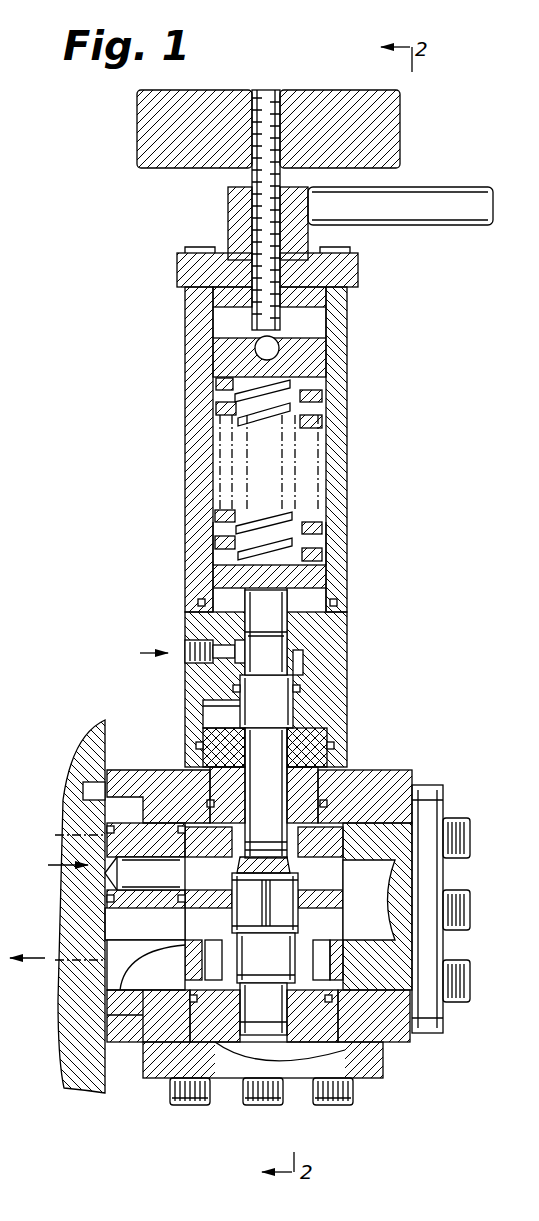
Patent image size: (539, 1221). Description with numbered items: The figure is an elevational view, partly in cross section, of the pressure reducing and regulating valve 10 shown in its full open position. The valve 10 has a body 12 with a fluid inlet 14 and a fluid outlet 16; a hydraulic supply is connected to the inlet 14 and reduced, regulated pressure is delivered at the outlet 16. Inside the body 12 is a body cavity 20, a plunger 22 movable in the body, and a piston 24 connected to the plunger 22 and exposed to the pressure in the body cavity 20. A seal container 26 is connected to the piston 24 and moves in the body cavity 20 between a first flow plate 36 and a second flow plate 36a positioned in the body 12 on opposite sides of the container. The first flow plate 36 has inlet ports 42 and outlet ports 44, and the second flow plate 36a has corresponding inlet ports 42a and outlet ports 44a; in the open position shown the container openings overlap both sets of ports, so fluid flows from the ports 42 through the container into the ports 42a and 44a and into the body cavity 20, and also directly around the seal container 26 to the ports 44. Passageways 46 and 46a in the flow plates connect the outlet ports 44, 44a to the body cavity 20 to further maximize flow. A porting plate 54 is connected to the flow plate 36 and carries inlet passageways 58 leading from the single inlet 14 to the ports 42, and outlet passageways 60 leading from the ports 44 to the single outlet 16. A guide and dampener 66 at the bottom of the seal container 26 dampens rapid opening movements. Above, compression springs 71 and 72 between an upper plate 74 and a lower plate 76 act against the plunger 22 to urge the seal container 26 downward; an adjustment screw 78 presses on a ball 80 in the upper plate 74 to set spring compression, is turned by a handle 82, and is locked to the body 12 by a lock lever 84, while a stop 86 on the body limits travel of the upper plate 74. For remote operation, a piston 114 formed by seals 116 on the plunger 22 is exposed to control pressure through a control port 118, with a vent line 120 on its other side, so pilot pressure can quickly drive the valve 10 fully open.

The pressure reducing and regulating valve 10 is at (352, 413).
The body 12 is at (375, 790).
The fluid inlet 14 is at (107, 840).
The fluid outlet 16 is at (102, 960).
The body cavity 20 is at (425, 800).
The plunger 22 is at (285, 752).
The piston 24 is at (215, 737).
The seal container 26 is at (222, 790).
The first flow plate 36 is at (178, 1045).
The second flow plate 36a is at (380, 1045).
The first and second inlet ports 42 is at (216, 891).
The inlet ports of second flow plate 42a is at (340, 870).
The first and second outlet ports 44 is at (210, 939).
The outlet ports of second flow plate 44a is at (345, 932).
The passageway 46 is at (195, 1080).
The passageway 46a is at (350, 1080).
The porting plate 54 is at (100, 1000).
The first and second inlet passageways 58 is at (140, 878).
The first and second outlet passageways 60 is at (108, 975).
The guide and dampener 66 is at (310, 1060).
The compression spring 71 is at (322, 392).
The compression spring 72 is at (285, 527).
The upper plate 74 is at (279, 348).
The lower plate 76 is at (330, 580).
The adjustment screw 78 is at (238, 218).
The ball 80 is at (262, 350).
The handle 82 is at (385, 115).
The lock lever 84 is at (468, 200).
The stop 86 is at (216, 382).
The piston 114 is at (300, 712).
The seals 116 is at (300, 690).
The control port 118 is at (200, 641).
The vent line 120 is at (220, 708).